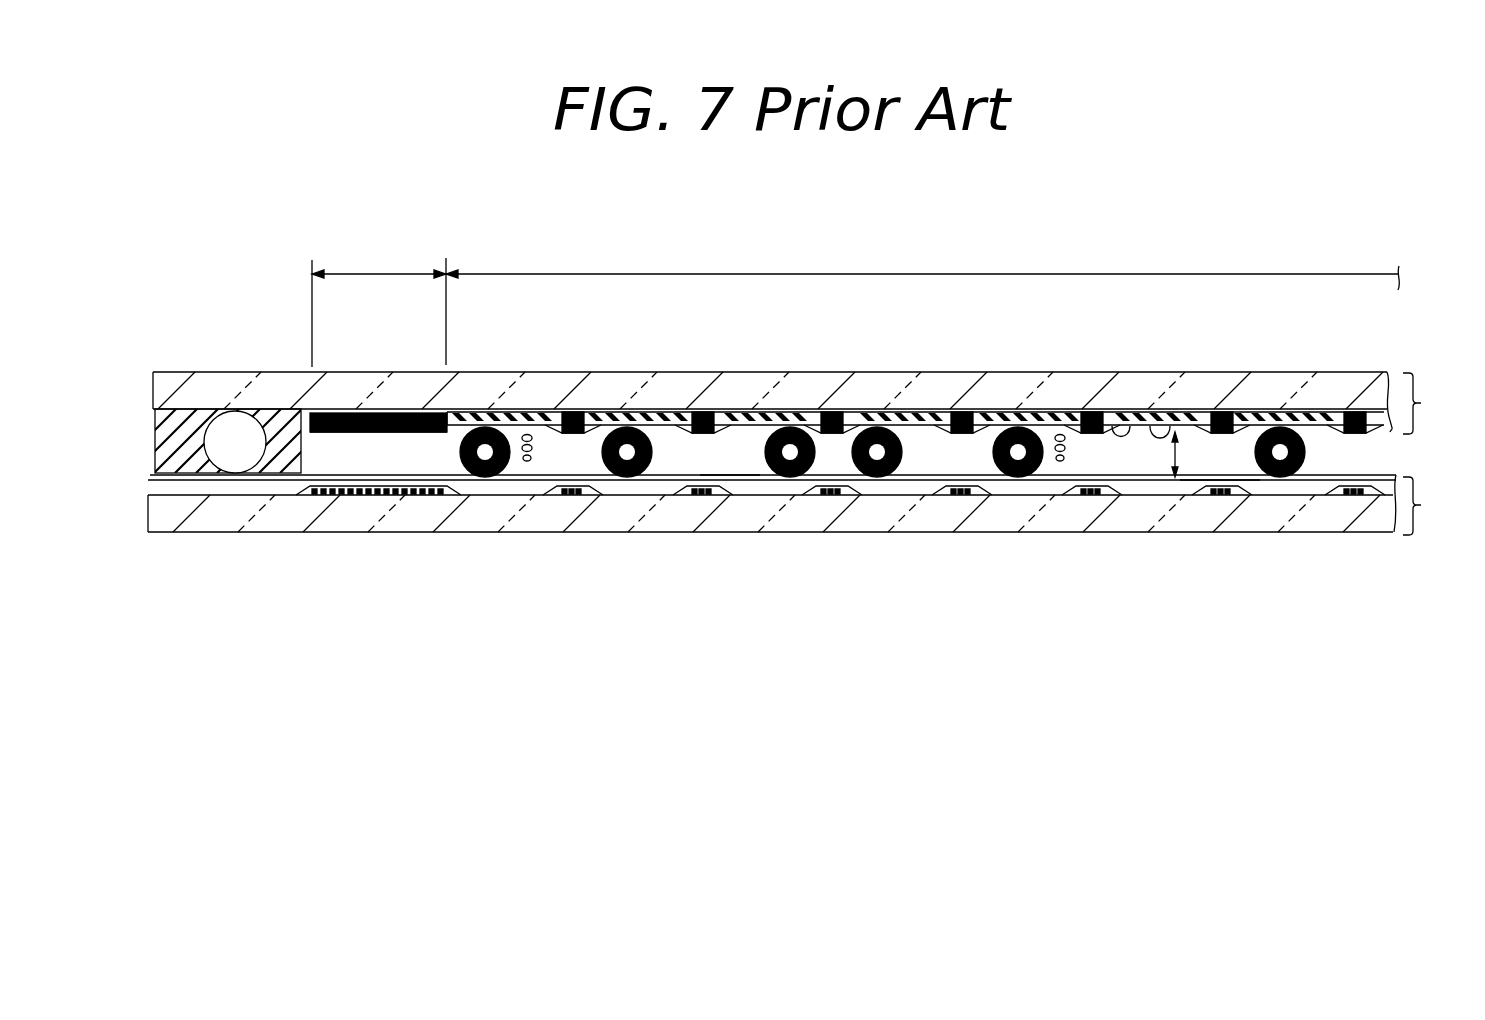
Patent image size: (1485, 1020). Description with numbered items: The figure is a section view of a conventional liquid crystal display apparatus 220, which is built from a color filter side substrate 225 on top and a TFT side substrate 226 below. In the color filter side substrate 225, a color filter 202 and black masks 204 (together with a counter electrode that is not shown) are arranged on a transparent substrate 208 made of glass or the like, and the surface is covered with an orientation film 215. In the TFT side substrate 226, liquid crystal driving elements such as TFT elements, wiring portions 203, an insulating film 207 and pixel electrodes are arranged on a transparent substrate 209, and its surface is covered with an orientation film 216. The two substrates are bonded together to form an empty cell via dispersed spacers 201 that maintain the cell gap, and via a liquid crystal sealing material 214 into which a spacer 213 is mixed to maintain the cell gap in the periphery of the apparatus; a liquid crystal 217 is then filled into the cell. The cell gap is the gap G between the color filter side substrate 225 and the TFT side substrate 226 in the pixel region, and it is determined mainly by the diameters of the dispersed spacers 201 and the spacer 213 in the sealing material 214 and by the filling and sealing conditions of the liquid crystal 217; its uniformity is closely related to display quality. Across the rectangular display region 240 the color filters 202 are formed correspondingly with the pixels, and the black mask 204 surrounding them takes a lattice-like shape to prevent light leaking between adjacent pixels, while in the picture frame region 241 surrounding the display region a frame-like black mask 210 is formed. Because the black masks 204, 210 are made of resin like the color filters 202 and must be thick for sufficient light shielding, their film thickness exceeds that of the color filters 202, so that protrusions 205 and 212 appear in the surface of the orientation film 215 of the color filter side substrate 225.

The dispersed spacers 201 is at (627, 450).
The color filter 202 is at (918, 417).
The wiring portions 203 is at (570, 494).
The black mask 204 is at (836, 424).
The protrusion 205 is at (722, 440).
The insulating film 207 is at (480, 494).
The transparent substrate 208 is at (1036, 412).
The transparent substrate 209 is at (995, 514).
The frame-like black mask 210 is at (384, 415).
The protrusion 212 is at (376, 441).
The spacer 213 is at (238, 439).
The liquid crystal sealing material 214 is at (180, 461).
The orientation film 215 is at (1138, 425).
The orientation film 216 is at (1128, 474).
The liquid crystal 217 is at (1200, 452).
The liquid crystal display apparatus 220 is at (1321, 361).
The color filter side substrate 225 is at (1441, 403).
The TFT side substrate 226 is at (1441, 506).
The display region 240 is at (893, 274).
The picture frame region 241 is at (378, 273).
The gap G is at (1172, 410).